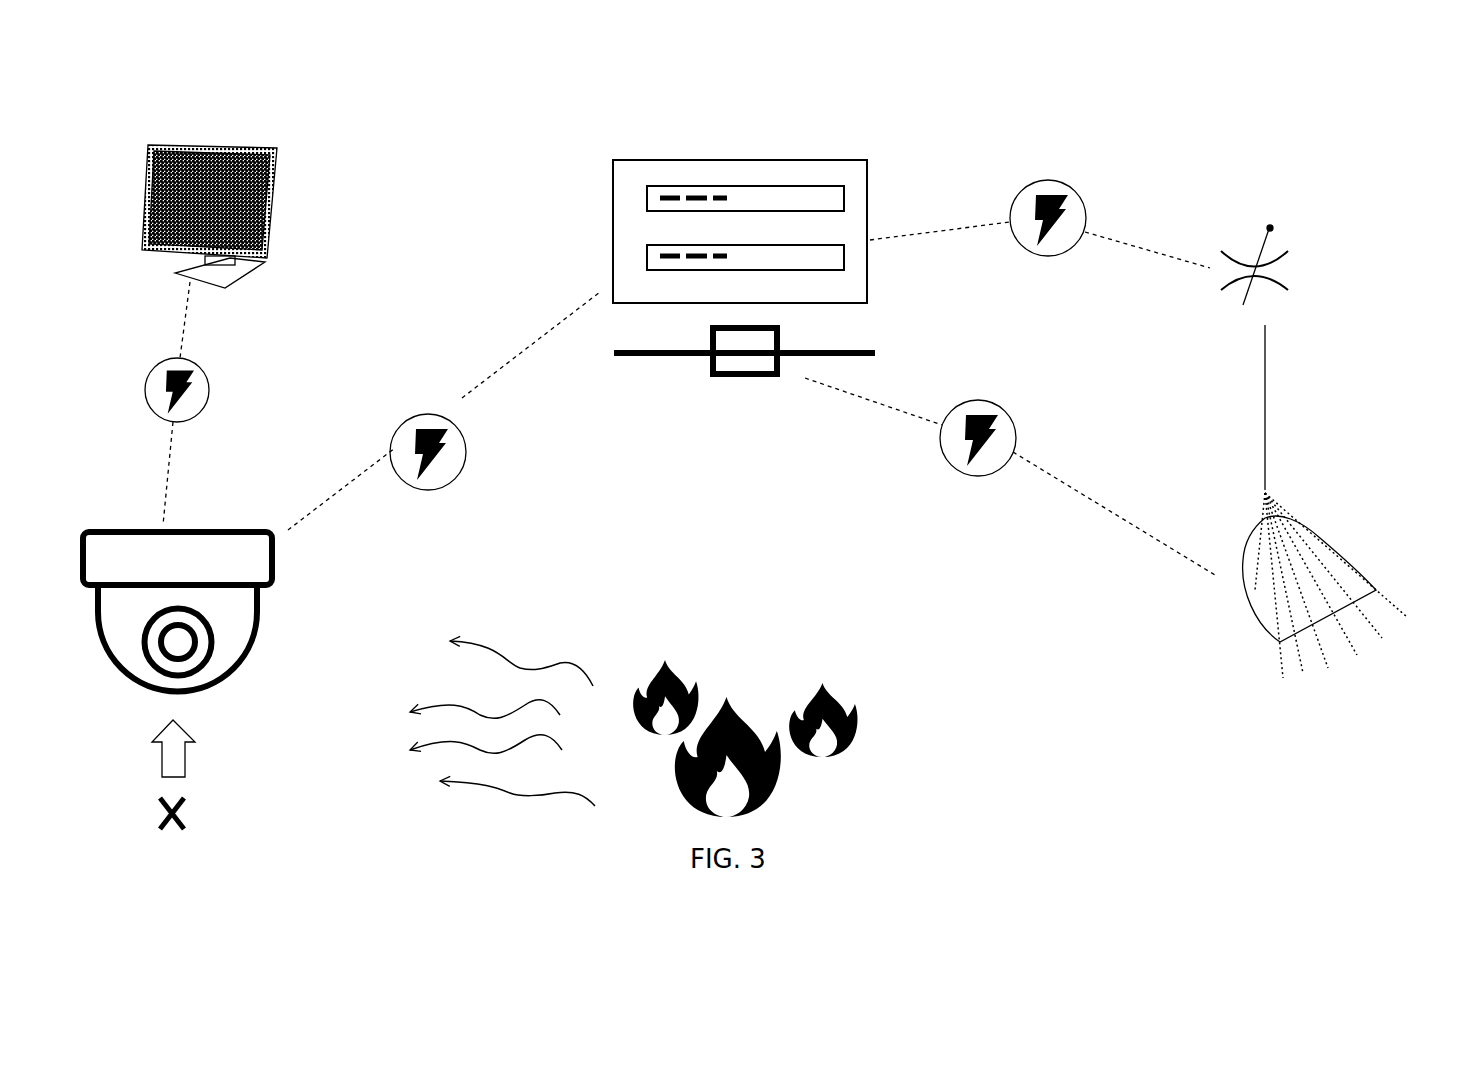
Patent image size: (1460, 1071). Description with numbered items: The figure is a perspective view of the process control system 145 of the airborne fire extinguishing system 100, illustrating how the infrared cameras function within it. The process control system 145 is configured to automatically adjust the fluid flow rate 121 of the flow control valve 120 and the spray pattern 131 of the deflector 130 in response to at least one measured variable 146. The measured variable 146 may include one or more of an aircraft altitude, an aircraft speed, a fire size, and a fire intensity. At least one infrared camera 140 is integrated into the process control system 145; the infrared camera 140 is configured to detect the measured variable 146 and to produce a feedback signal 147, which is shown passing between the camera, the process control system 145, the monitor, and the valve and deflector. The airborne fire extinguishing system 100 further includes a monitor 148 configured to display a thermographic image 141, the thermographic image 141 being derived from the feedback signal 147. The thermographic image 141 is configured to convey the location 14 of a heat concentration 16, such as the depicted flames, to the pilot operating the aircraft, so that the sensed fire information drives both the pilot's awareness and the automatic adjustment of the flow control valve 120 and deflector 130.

The airborne fire extinguishing system 100 is at (1312, 150).
The location 14 is at (835, 763).
The heat concentration 16 is at (785, 812).
The flow control valve 120 is at (1295, 268).
The fluid flow rate 121 is at (1273, 394).
The deflector 130 is at (1330, 545).
The spray pattern 131 is at (1358, 682).
The infrared camera 140 is at (258, 605).
The thermographic image 141 is at (255, 228).
The process control system 145 is at (786, 150).
The measured variable 146 is at (205, 817).
The feedback signal 147 is at (215, 368).
The monitor 148 is at (250, 140).